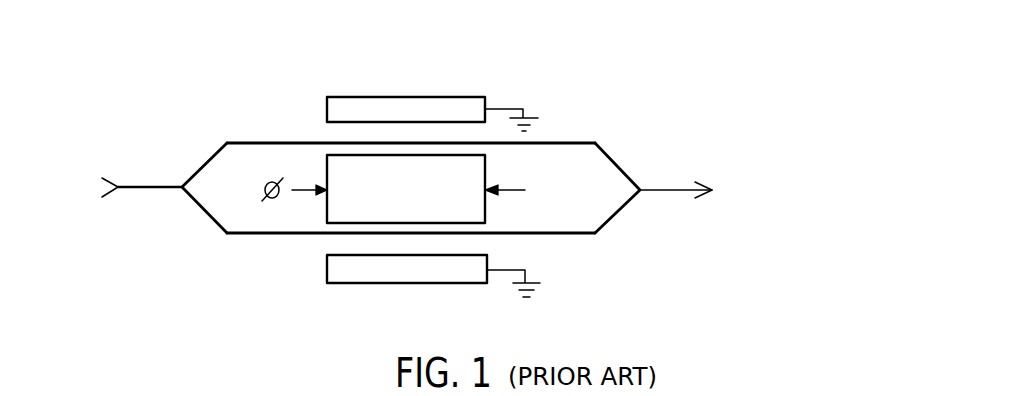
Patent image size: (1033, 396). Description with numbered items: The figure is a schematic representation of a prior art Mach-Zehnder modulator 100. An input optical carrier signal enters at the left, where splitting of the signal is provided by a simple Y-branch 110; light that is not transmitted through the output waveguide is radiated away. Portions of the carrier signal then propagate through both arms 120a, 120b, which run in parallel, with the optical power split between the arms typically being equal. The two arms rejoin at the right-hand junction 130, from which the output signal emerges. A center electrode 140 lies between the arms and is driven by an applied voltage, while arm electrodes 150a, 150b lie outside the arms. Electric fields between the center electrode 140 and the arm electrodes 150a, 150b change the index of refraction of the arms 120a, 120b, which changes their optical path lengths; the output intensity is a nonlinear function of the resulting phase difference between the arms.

The MZ modulator 100 is at (658, 103).
The Y-branch 110 is at (195, 207).
The arm 120a is at (267, 143).
The arm 120b is at (260, 233).
The output Y-branch combiner 130 is at (616, 203).
The center electrode 140 is at (485, 208).
The arm electrode 150a is at (485, 96).
The arm electrode 150b is at (470, 283).